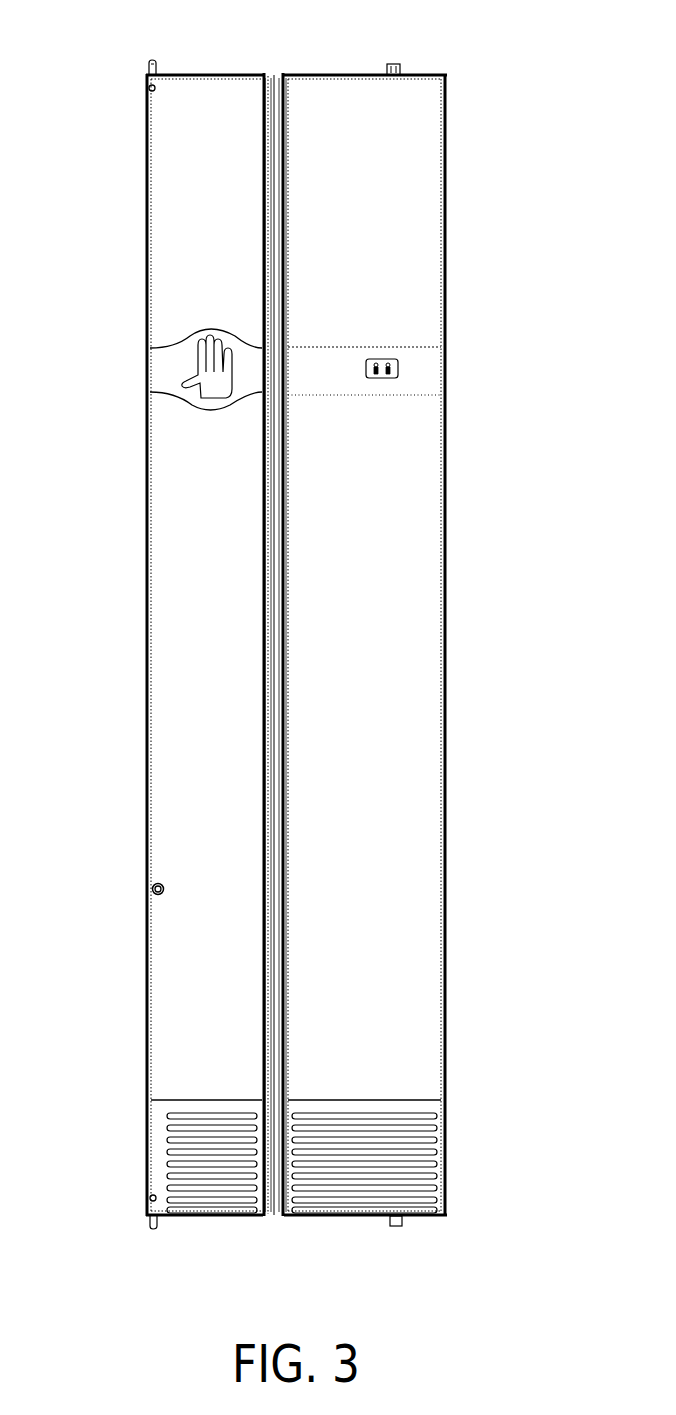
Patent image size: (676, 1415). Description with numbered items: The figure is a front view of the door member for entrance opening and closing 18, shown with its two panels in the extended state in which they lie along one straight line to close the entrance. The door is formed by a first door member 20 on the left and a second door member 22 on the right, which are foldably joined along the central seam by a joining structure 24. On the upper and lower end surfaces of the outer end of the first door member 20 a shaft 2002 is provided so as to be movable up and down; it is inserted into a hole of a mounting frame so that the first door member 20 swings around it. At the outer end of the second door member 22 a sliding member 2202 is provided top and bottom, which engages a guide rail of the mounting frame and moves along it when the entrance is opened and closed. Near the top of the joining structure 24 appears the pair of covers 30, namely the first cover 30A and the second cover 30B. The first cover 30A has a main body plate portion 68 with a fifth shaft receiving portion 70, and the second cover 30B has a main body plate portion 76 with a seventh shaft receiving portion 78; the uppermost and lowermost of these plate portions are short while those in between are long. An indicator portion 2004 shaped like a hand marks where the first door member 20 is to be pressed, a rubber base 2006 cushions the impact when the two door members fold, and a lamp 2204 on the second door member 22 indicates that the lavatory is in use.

The door member for entrance opening and closing 18 is at (300, 645).
The first door member 20 is at (180, 522).
The second door member 22 is at (392, 547).
The joining structure 24 is at (270, 70).
The pair of covers 30 is at (298, 644).
The first cover 30A is at (267, 203).
The second cover 30B is at (278, 215).
The main body plate portion 68 is at (278, 145).
The fifth shaft receiving portion 70 is at (275, 1176).
The main body plate portion 76 is at (263, 84).
The seventh shaft receiving portion 78 is at (273, 635).
The shaft 2002 is at (145, 77).
The indicator portion 2004 is at (197, 363).
The rubber base 2006 is at (158, 884).
The sliding member 2202 is at (398, 66).
The lamp 2204 is at (385, 360).